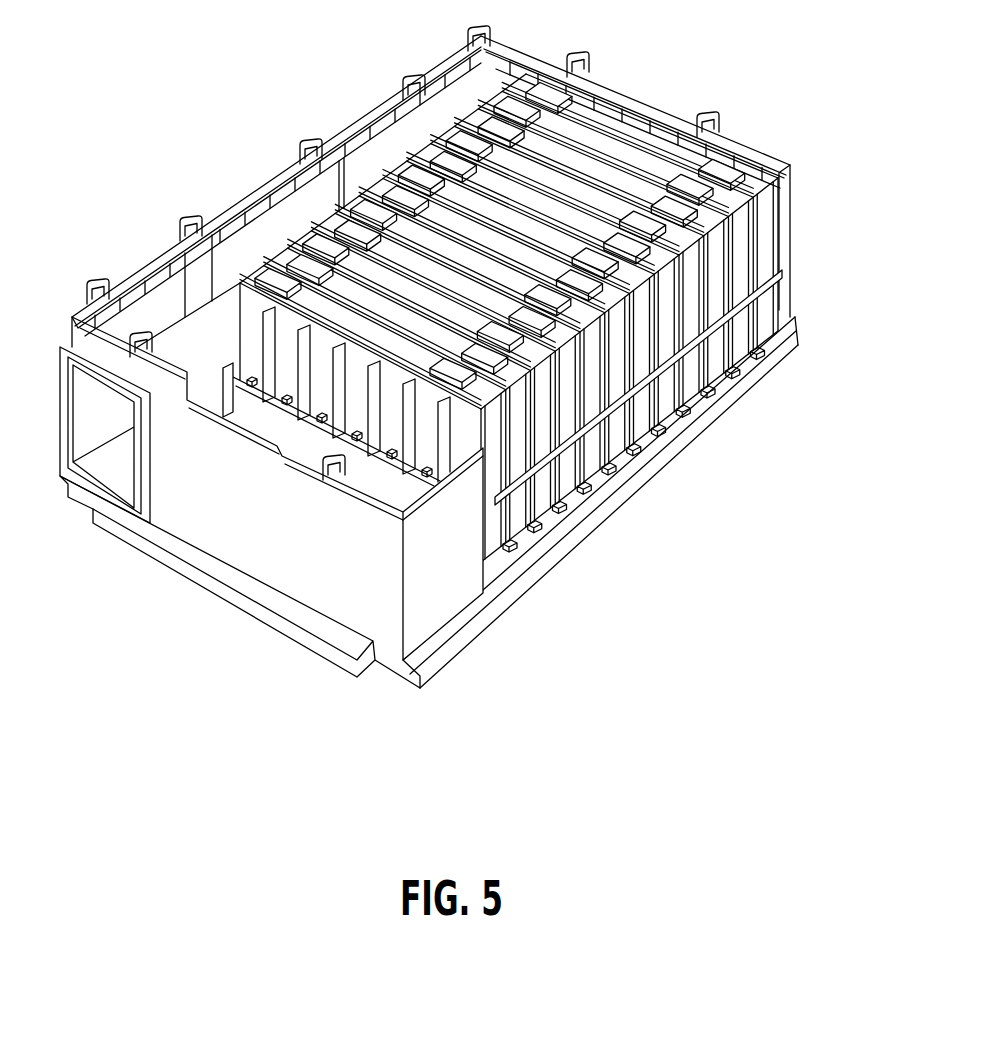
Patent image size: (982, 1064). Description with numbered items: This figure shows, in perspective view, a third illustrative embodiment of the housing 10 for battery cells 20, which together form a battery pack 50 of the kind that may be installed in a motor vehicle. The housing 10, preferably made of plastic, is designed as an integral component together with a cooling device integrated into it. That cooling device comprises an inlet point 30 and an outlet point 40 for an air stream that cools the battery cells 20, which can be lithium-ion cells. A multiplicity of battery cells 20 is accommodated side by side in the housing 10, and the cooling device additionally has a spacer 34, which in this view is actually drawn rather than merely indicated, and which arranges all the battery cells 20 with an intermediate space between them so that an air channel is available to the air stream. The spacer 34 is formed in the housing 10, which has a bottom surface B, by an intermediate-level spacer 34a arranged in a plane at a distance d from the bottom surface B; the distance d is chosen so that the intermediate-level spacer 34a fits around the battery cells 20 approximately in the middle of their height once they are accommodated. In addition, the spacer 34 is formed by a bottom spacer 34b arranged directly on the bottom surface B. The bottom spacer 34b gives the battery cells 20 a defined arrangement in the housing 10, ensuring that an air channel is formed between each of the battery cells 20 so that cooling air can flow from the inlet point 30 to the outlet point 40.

The housing 10 is at (262, 146).
The battery pack 50 is at (447, 357).
The battery cells 20 is at (600, 138).
The inlet point 30 is at (84, 490).
The spacer 34 is at (817, 483).
The intermediate-level spacer 34a is at (632, 392).
The bottom spacer 34b is at (646, 458).
The outlet point 40 is at (792, 366).
The distance d is at (797, 248).
The bottom surface B is at (802, 328).